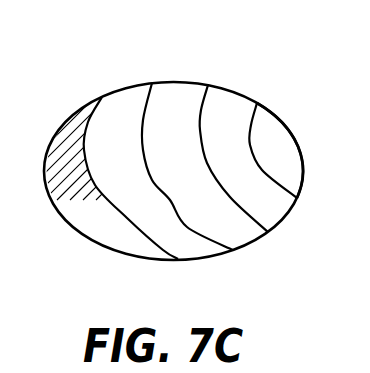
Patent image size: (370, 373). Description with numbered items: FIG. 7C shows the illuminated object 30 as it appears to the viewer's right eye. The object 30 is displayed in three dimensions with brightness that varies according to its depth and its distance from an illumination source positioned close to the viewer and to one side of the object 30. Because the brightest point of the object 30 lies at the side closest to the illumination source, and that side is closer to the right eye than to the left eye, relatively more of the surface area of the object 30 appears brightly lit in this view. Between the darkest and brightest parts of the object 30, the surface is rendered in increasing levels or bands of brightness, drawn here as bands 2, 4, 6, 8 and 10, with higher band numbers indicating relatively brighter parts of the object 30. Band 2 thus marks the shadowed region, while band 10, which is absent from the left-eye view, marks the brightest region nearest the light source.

The object 30 is at (227, 107).
The band 2 is at (58, 187).
The band 4 is at (113, 182).
The band 6 is at (174, 180).
The band 8 is at (229, 169).
The band 10 is at (262, 162).